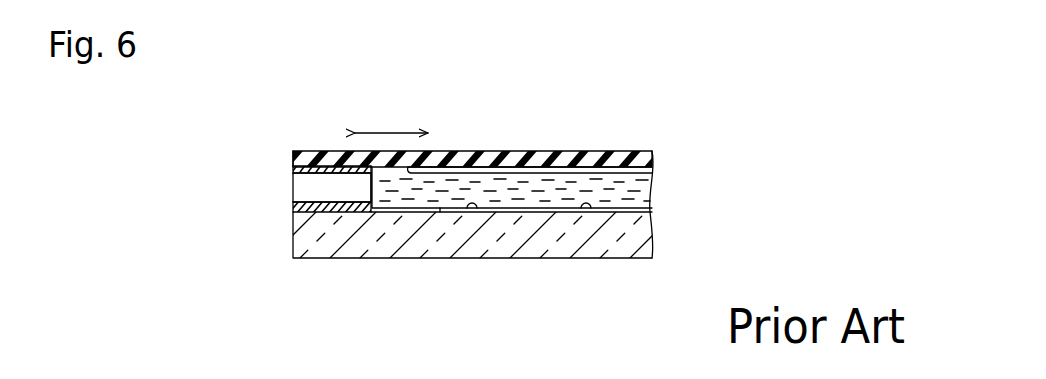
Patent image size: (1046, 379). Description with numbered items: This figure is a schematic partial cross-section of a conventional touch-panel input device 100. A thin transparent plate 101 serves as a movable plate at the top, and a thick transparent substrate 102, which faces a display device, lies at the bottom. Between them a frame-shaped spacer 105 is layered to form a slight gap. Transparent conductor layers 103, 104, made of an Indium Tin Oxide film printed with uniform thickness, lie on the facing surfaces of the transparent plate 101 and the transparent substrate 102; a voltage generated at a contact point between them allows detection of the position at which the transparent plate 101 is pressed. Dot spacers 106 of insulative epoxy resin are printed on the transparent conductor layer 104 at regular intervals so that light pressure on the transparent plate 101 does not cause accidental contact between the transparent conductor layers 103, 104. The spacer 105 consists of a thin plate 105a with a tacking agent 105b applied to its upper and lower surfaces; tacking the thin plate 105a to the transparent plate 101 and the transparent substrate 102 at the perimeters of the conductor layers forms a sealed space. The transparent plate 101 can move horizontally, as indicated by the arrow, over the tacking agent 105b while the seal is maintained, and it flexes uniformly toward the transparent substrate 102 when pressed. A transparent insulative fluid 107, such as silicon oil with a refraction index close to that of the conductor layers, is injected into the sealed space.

The touch-panel input device 100 is at (443, 110).
The transparent plate 101 is at (497, 160).
The transparent substrate 102 is at (603, 240).
The transparent conductor layer 103 is at (583, 172).
The transparent conductor layer 104 is at (540, 210).
The spacer 105 is at (172, 157).
The thin plate 105a is at (293, 188).
The tacking agent 105b is at (293, 168).
The dot spacers 106 is at (483, 210).
The transparent insulative fluid 107 is at (645, 192).